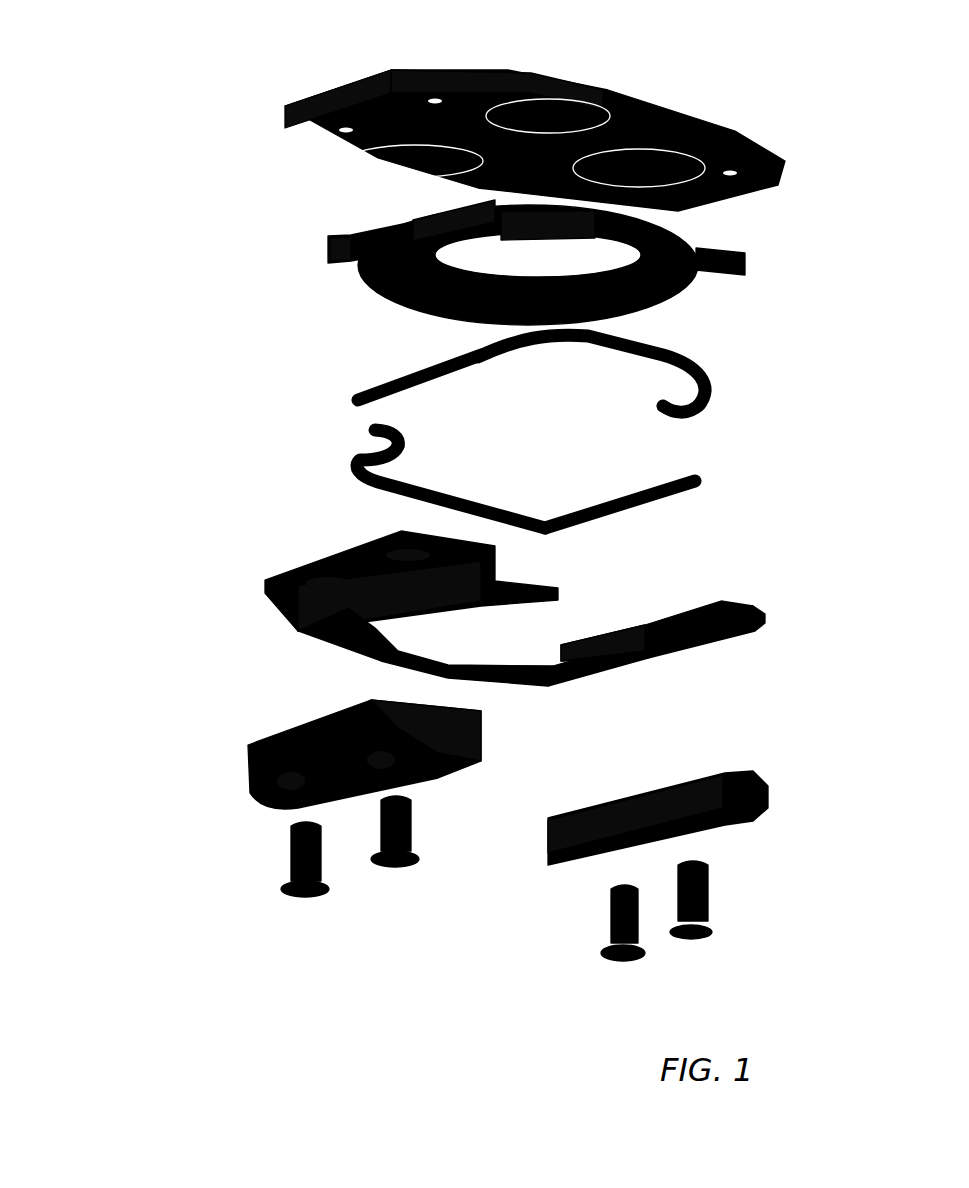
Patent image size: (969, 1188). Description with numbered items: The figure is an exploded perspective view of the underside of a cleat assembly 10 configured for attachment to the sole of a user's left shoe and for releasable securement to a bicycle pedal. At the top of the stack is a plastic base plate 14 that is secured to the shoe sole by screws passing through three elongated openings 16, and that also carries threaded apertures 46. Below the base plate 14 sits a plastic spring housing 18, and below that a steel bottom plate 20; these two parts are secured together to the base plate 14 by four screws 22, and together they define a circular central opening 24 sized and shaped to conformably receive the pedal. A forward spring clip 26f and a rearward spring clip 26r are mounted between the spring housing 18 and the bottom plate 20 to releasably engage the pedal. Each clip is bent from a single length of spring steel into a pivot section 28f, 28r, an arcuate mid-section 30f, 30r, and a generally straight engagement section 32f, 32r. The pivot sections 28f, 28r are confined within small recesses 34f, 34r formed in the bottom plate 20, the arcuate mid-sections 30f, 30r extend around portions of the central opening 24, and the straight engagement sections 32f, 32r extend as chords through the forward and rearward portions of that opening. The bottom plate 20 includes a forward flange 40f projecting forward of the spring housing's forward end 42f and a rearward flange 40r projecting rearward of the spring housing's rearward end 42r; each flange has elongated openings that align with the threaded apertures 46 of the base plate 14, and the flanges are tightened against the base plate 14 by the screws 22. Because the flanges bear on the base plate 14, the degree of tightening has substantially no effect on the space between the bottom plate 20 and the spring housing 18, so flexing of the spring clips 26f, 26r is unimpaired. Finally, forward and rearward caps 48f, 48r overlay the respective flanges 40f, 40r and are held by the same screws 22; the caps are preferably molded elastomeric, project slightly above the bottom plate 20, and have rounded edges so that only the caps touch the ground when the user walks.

The cleat assembly 10 is at (124, 427).
The base plate 14 is at (567, 110).
The elongated openings 16 is at (587, 80).
The spring housing 18 is at (527, 262).
The bottom plate 20 is at (535, 606).
The screws 22 is at (312, 890).
The circular central opening 24 is at (507, 593).
The rearward spring clip 26r is at (574, 378).
The forward spring clip 26f is at (480, 470).
The pivot section 28r is at (683, 410).
The pivot section 28f is at (353, 422).
The arcuate mid-section 30r is at (667, 347).
The arcuate mid-section 30f is at (407, 473).
The straight engagement section 32r is at (457, 367).
The straight engagement section 32f is at (603, 493).
The recess 34f is at (380, 600).
The recess 34r is at (640, 620).
The rearward flange 40r is at (280, 563).
The forward flange 40f is at (740, 627).
The rearward end 42r is at (320, 240).
The forward end 42f is at (707, 273).
The threaded apertures 46 is at (438, 82).
The rearward cap 48r is at (240, 760).
The forward cap 48f is at (760, 793).